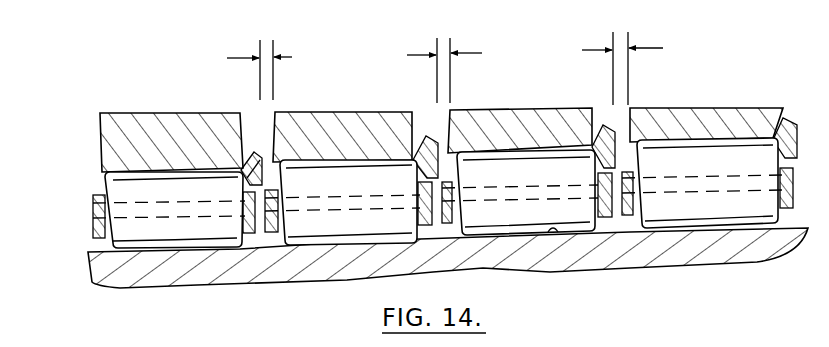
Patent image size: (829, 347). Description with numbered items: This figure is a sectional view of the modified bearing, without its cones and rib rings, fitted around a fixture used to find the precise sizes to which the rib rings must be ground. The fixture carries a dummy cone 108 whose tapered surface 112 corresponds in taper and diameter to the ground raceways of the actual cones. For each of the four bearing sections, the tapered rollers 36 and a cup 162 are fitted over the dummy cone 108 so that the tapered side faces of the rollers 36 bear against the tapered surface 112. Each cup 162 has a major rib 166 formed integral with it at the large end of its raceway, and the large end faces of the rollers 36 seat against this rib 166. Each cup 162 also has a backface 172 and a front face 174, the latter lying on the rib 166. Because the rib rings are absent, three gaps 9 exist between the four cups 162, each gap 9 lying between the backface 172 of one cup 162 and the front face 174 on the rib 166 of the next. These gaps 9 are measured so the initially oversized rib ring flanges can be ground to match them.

The cup 162 is at (133, 115).
The backface 172 is at (265, 118).
The gap 9 is at (435, 61).
The major rib 166 is at (240, 177).
The front face 174 is at (263, 171).
The dummy cone 108 is at (278, 273).
The tapered rollers 36 is at (347, 235).
The tapered surface 112 is at (556, 230).